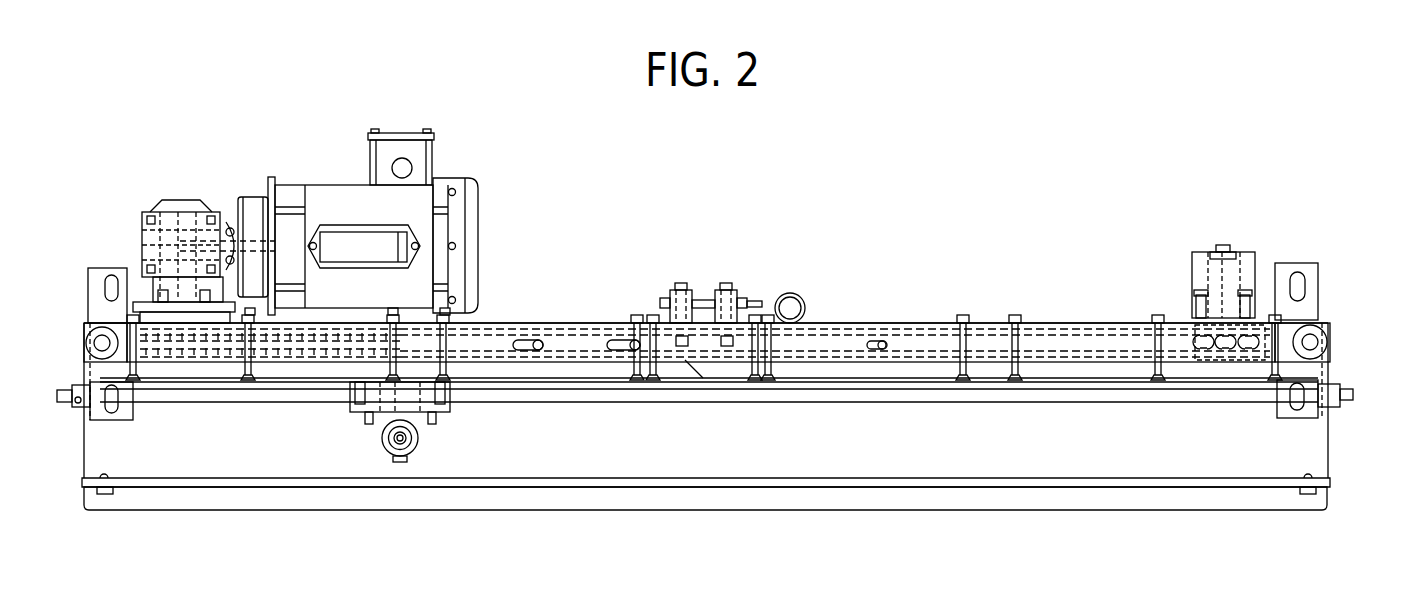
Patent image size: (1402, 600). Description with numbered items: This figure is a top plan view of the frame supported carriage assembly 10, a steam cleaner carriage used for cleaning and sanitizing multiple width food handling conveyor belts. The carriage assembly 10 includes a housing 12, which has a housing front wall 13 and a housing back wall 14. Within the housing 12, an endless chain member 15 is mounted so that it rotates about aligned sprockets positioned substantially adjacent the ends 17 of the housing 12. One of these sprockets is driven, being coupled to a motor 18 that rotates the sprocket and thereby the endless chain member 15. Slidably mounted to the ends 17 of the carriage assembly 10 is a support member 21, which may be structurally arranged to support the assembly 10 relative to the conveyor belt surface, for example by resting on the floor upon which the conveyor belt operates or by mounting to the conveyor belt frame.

The frame supported carriage assembly 10 is at (908, 202).
The housing 12 is at (83, 450).
The housing front wall 13 is at (925, 382).
The housing back wall 14 is at (940, 323).
The endless chain member 15 is at (313, 362).
The ends 17 is at (83, 372).
The motor 18 is at (470, 220).
The support member 21 is at (99, 272).